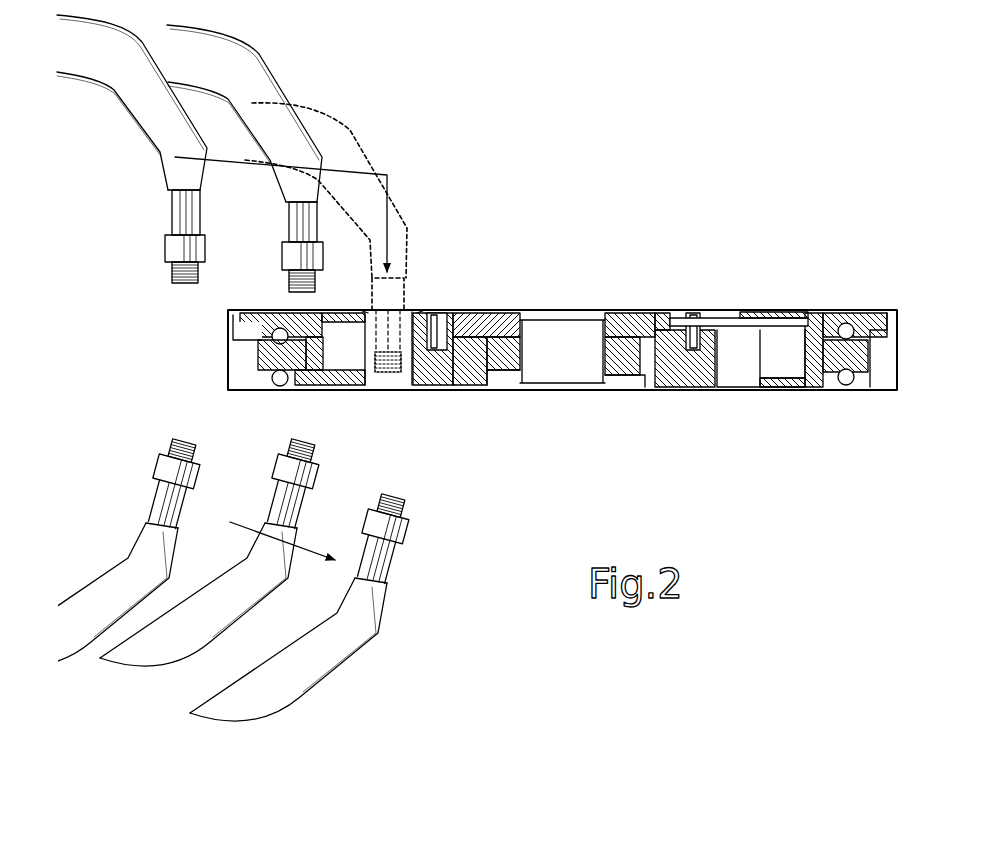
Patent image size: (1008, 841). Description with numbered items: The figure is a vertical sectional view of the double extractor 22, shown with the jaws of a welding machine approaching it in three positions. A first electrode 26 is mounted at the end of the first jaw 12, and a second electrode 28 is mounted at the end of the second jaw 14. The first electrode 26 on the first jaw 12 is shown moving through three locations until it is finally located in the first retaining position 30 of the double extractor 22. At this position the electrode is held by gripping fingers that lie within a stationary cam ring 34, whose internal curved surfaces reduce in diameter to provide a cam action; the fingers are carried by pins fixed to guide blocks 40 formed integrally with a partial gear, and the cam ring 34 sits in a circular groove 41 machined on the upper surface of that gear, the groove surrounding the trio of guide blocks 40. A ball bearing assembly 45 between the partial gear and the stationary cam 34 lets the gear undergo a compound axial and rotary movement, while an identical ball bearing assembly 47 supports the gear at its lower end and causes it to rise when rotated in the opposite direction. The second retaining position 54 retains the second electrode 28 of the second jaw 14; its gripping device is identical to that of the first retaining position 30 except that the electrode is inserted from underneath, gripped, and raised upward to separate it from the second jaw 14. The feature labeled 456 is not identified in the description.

The first jaw 12 is at (173, 185).
The first electrode 26 is at (173, 252).
The first retaining position 30 is at (370, 310).
The double extractor 22 is at (588, 266).
The second retaining position 54 is at (740, 311).
The stationary cam ring 34 is at (262, 311).
The groove 456 is at (228, 322).
The ball bearing assembly 45 is at (268, 348).
The ball bearing assembly 47 is at (267, 390).
The circular groove 41 is at (338, 352).
The guide blocks 40 is at (332, 396).
The second jaw 14 is at (148, 537).
The second electrode 28 is at (160, 468).